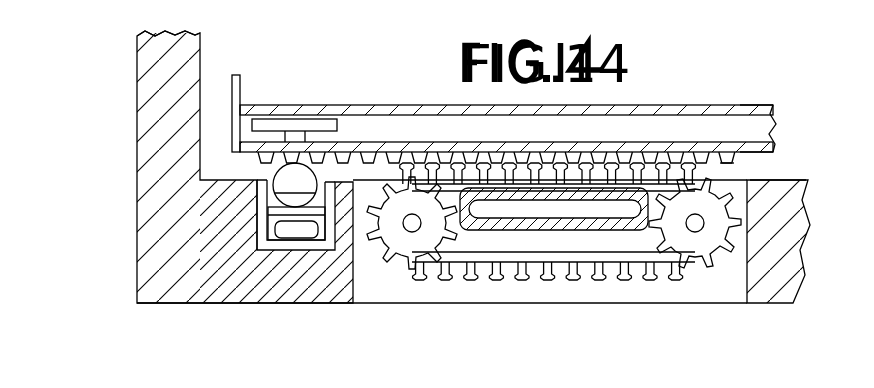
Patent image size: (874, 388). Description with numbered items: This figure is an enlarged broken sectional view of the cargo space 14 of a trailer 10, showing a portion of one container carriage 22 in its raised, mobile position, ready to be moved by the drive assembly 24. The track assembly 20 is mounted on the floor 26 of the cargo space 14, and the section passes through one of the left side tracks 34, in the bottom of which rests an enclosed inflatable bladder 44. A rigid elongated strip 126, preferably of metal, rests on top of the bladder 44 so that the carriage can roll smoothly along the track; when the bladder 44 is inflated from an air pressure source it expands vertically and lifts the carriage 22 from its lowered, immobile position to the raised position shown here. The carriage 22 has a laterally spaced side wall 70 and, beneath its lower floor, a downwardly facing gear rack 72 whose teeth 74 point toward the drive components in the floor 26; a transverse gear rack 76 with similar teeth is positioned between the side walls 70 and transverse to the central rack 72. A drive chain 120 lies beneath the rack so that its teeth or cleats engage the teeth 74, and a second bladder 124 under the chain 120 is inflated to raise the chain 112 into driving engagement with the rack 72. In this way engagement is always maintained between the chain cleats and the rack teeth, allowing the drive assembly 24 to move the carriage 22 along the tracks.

The trailer 10 is at (137, 175).
The cargo space 14 is at (215, 75).
The track assembly 20 is at (258, 252).
The container carriage 22 is at (728, 96).
The drive assembly 24 is at (591, 292).
The floor 26 is at (777, 181).
The left side tracks 34 is at (283, 170).
The bladder 44 is at (267, 264).
The side wall 70 is at (240, 80).
The gear rack 72 is at (480, 158).
The teeth 74 is at (747, 108).
The transverse gear rack 76 is at (354, 163).
The chain 112 is at (725, 172).
The drive chain 120 is at (470, 258).
The bladder 124 is at (510, 213).
The rigid elongated strip 126 is at (255, 228).